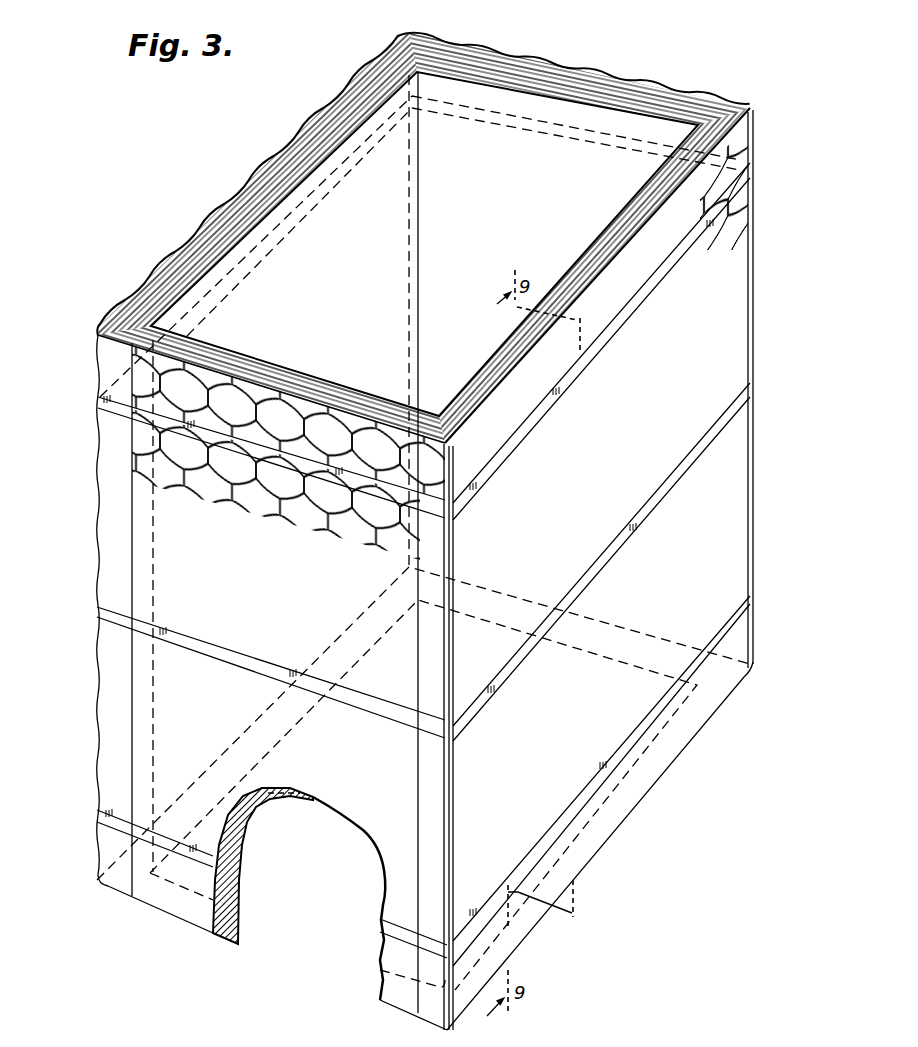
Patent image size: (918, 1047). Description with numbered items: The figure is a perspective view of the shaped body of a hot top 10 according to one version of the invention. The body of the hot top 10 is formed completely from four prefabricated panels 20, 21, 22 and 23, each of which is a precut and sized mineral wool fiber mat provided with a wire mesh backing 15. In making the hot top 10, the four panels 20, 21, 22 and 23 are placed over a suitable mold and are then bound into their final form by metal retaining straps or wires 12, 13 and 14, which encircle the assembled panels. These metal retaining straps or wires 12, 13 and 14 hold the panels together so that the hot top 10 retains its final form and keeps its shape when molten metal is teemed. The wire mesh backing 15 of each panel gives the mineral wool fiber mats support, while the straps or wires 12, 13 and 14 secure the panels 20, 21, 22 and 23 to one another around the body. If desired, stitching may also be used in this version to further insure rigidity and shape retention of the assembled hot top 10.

The hot top 10 is at (707, 82).
The metal retaining strap 12 is at (753, 176).
The metal retaining strap 13 is at (754, 392).
The metal retaining strap 14 is at (753, 598).
The wire mesh backing 15 is at (573, 93).
The prefabricated panel 20 is at (423, 238).
The prefabricated panel 21 is at (572, 104).
The prefabricated panel 22 is at (280, 157).
The prefabricated panel 23 is at (355, 372).